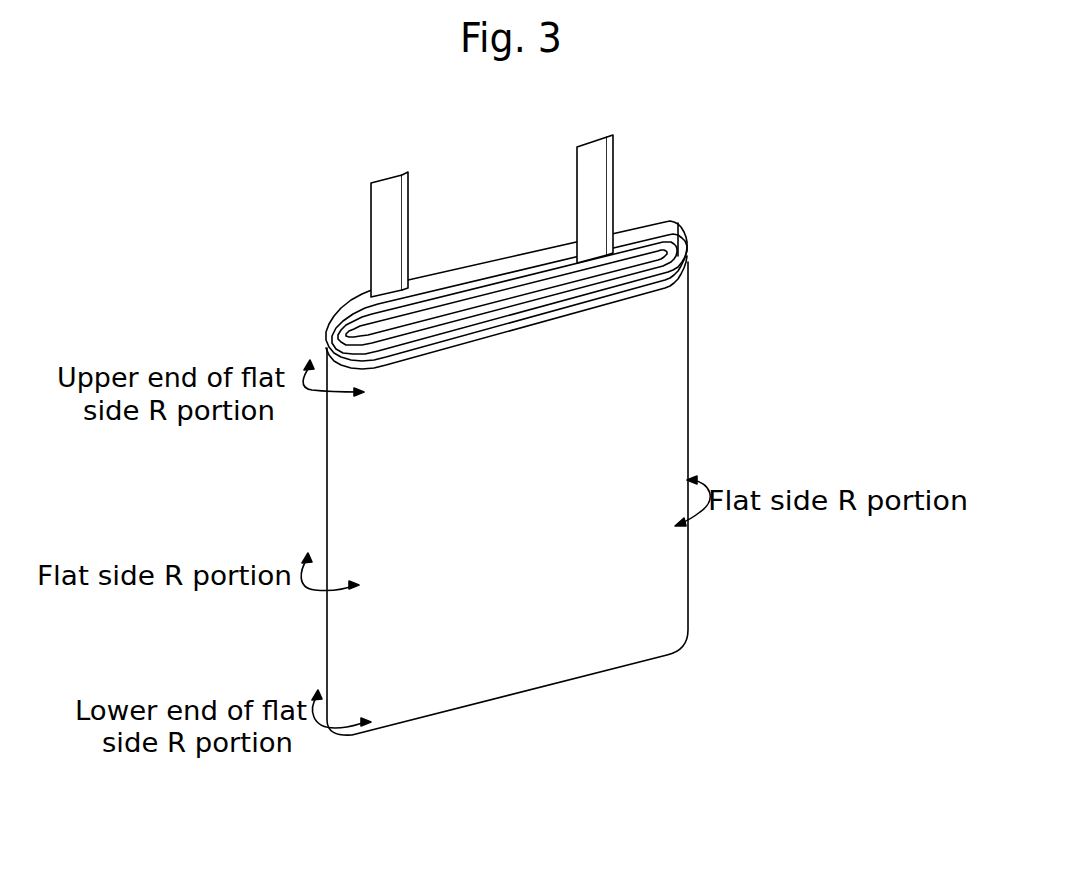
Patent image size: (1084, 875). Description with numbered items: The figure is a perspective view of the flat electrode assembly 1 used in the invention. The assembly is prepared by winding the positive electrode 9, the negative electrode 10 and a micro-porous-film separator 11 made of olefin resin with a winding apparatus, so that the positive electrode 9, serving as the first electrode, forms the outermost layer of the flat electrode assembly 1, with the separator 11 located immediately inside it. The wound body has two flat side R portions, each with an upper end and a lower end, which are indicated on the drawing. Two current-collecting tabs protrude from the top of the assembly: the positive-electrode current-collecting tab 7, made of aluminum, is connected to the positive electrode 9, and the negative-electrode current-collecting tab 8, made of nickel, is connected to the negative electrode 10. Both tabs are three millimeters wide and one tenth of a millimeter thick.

The electrode assembly 1 is at (697, 255).
The positive-electrode current-collecting tab 7 is at (398, 237).
The negative-electrode current-collecting tab 8 is at (600, 198).
The positive electrode 9 is at (330, 345).
The negative electrode 10 is at (353, 328).
The separator 11 is at (639, 235).